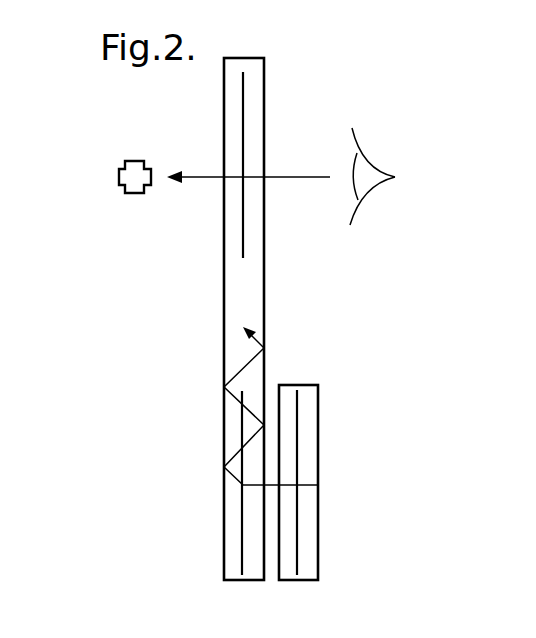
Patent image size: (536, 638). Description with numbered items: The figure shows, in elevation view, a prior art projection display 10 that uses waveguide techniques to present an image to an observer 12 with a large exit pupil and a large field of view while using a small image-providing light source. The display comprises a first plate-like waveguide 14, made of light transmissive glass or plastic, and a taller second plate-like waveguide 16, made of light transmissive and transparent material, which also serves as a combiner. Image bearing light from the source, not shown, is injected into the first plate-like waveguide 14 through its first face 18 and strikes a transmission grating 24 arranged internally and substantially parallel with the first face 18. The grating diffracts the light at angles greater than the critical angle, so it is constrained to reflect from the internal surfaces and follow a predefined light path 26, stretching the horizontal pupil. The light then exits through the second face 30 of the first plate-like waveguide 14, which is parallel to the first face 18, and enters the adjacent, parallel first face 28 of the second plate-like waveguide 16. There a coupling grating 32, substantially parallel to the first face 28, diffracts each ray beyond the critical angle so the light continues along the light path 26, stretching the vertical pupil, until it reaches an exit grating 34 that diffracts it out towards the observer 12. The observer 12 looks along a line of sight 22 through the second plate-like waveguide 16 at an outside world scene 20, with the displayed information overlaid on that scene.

The projection display 10 is at (294, 65).
The observer 12 is at (365, 183).
The first plate-like waveguide 14 is at (307, 452).
The second plate-like waveguide 16 is at (255, 268).
The first face 18 is at (318, 571).
The outside world scene 20 is at (133, 161).
The line of sight 22 is at (192, 178).
The transmission grating 24 is at (297, 545).
The light path 26 is at (241, 371).
The first face 28 is at (265, 385).
The second face 30 is at (282, 401).
The coupling grating 32 is at (242, 556).
The exit grating 34 is at (243, 102).